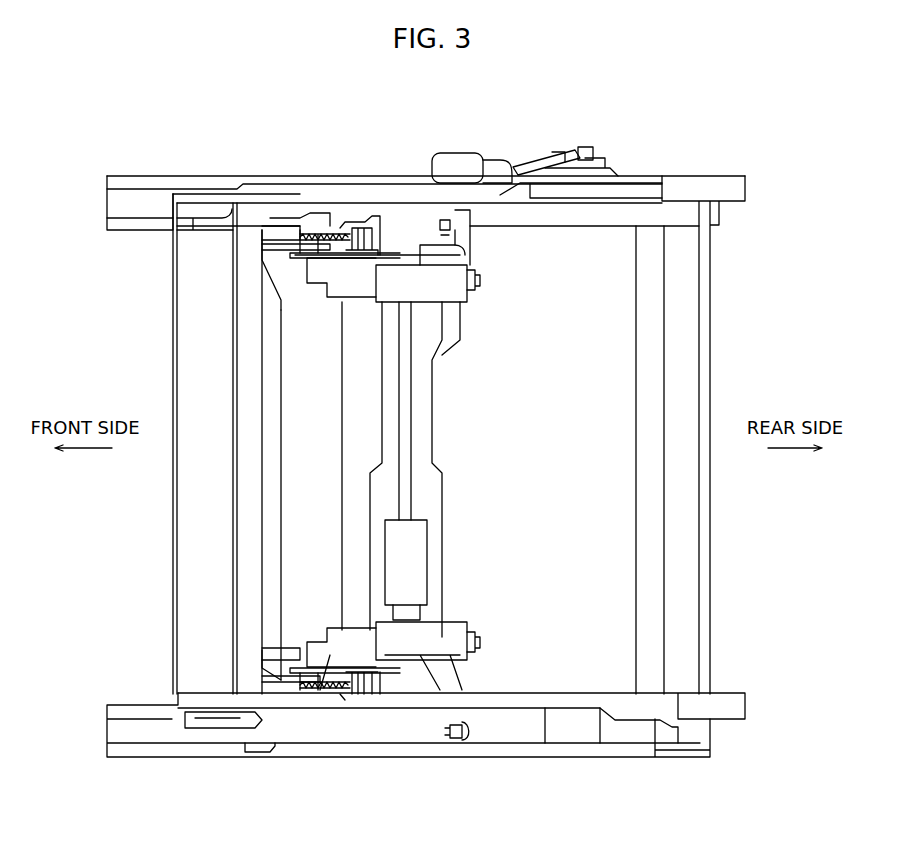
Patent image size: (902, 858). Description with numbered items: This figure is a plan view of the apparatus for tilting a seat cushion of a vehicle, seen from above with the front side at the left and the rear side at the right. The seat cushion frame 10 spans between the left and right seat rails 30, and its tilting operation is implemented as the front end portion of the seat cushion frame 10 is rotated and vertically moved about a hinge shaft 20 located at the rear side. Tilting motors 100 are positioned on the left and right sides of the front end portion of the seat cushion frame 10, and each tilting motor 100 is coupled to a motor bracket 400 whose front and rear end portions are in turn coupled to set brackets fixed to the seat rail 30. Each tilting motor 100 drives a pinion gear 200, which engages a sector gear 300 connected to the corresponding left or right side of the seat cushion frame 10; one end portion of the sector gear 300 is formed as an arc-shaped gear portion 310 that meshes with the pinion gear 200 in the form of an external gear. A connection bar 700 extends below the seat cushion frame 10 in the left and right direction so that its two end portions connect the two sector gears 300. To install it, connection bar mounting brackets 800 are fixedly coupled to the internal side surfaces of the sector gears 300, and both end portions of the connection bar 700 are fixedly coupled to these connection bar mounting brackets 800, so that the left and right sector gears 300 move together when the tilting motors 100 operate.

The seat cushion frame 10 is at (502, 197).
The hinge shaft 20 is at (650, 505).
The seat rail 30 is at (133, 172).
The tilting motor 100 is at (453, 288).
The pinion gear 200 is at (360, 228).
The sector gear 300 is at (282, 240).
The gear portion 310 is at (318, 240).
The motor bracket 400 is at (470, 255).
The connection bar 700 is at (272, 533).
The connection bar mounting bracket 800 is at (268, 267).